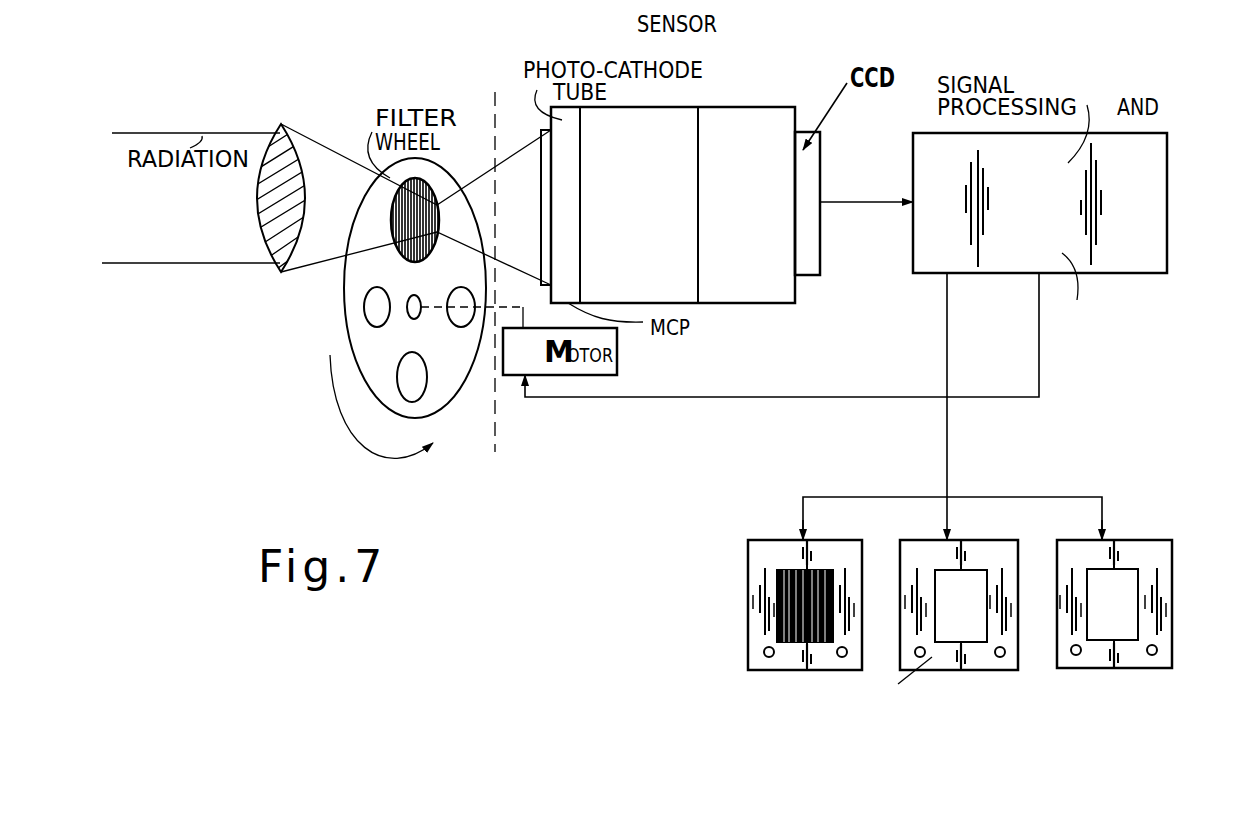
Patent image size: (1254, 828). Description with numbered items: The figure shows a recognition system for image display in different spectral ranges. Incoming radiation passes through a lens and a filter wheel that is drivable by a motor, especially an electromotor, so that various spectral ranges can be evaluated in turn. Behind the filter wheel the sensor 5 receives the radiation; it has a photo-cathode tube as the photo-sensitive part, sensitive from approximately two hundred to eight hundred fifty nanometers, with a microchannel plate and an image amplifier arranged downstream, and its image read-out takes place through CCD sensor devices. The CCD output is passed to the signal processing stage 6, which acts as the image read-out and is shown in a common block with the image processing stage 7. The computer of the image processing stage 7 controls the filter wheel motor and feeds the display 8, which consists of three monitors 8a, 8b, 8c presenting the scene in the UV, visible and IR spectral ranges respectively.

The sensor 5 is at (730, 97).
The signal processing stage 6 is at (1065, 199).
The image processing stage 7 is at (1101, 165).
The indicator or display 8 is at (943, 628).
The monitor 8a is at (765, 607).
The monitor 8b is at (1003, 627).
The monitor 8c is at (1162, 600).